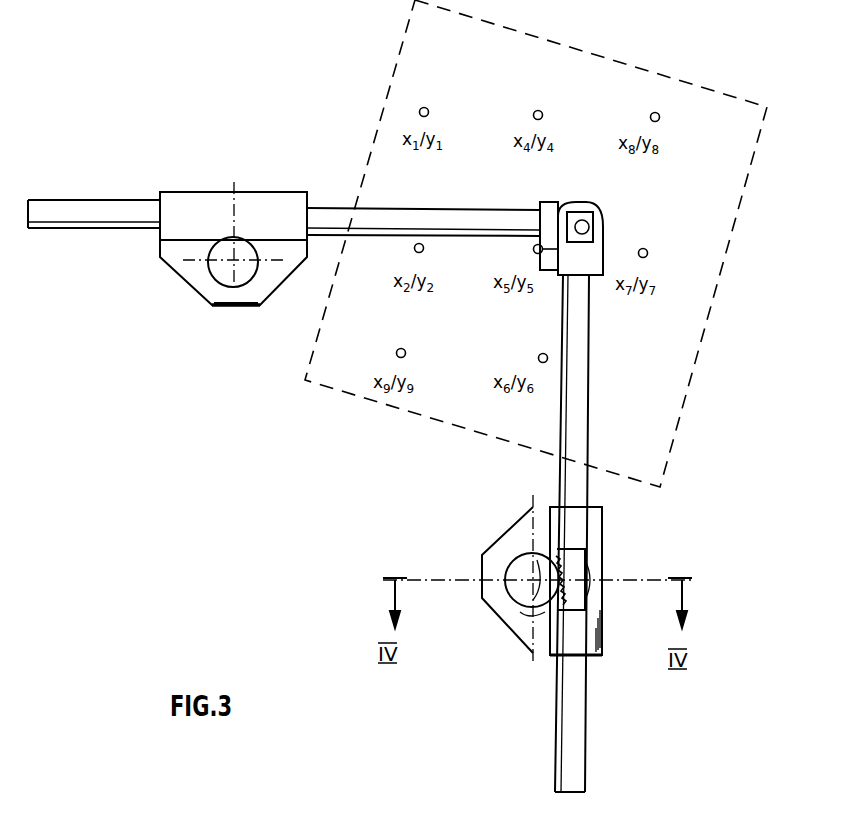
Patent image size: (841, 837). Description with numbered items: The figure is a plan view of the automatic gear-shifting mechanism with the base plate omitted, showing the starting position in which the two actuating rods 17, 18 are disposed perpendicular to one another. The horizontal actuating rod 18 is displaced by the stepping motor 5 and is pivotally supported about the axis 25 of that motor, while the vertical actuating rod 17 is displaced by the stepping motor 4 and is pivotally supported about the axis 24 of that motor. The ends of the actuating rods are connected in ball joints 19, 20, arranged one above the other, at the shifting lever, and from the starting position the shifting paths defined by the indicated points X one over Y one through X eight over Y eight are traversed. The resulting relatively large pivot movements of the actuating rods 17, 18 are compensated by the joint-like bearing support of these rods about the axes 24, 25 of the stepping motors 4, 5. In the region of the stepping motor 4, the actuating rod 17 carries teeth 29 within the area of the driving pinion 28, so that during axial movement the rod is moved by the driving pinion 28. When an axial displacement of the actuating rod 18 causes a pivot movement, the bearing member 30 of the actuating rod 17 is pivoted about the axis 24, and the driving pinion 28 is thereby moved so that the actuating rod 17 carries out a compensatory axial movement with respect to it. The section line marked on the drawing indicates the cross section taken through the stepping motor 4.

The stepping motor 4 is at (537, 600).
The stepping motor 5 is at (225, 275).
The actuating rod 17 is at (580, 387).
The actuating rod 18 is at (427, 222).
The ball joint 19 is at (598, 244).
The ball joint 20 is at (590, 223).
The axis 24 is at (517, 558).
The axis 25 is at (237, 254).
The driving pinion 28 is at (543, 538).
The teeth 29 is at (587, 563).
The bearing member 30 is at (185, 205).